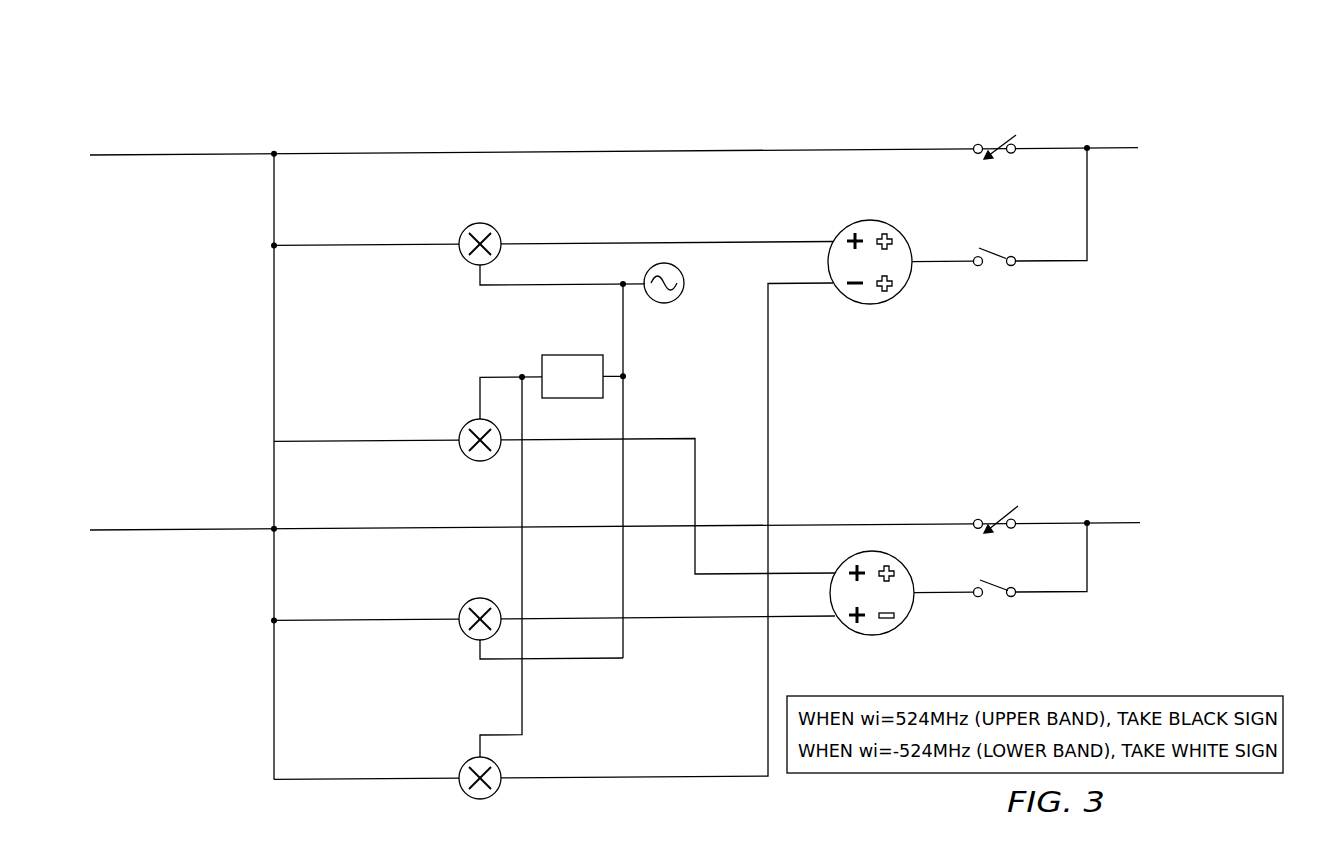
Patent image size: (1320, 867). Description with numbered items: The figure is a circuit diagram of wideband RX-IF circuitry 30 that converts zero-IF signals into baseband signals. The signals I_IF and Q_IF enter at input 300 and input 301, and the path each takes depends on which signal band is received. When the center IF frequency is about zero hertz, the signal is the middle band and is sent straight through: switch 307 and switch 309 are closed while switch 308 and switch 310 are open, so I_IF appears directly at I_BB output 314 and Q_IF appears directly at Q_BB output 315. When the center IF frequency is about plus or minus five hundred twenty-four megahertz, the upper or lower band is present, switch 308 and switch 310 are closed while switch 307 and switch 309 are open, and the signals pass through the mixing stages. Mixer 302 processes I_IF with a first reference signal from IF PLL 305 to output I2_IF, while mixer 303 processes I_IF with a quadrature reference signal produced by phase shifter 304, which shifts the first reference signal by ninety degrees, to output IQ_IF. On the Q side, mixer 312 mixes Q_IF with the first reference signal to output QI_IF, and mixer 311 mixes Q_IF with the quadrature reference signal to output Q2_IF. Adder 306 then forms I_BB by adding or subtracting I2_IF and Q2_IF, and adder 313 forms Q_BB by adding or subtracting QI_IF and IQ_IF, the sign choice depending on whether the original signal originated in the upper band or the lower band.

The wideband RX-IF circuitry 30 is at (170, 84).
The input 300 is at (100, 127).
The input 301 is at (100, 505).
The mixer 302 is at (477, 222).
The mixer 303 is at (478, 462).
The phase shifter 304 is at (561, 353).
The IF PLL 305 is at (685, 283).
The adder 306 is at (872, 220).
The switch 307 is at (995, 77).
The switch 308 is at (993, 272).
The switch 309 is at (997, 454).
The switch 310 is at (993, 601).
The mixer 311 is at (478, 800).
The mixer 312 is at (477, 596).
The adder 313 is at (872, 636).
The I_BB output 314 is at (1128, 117).
The Q_BB output 315 is at (1128, 494).